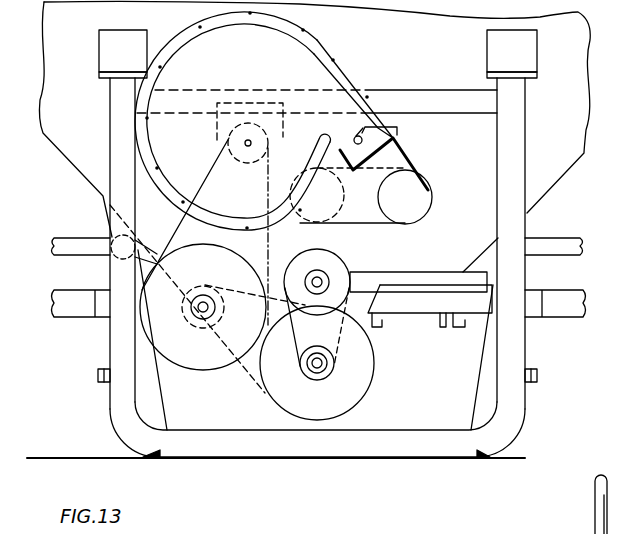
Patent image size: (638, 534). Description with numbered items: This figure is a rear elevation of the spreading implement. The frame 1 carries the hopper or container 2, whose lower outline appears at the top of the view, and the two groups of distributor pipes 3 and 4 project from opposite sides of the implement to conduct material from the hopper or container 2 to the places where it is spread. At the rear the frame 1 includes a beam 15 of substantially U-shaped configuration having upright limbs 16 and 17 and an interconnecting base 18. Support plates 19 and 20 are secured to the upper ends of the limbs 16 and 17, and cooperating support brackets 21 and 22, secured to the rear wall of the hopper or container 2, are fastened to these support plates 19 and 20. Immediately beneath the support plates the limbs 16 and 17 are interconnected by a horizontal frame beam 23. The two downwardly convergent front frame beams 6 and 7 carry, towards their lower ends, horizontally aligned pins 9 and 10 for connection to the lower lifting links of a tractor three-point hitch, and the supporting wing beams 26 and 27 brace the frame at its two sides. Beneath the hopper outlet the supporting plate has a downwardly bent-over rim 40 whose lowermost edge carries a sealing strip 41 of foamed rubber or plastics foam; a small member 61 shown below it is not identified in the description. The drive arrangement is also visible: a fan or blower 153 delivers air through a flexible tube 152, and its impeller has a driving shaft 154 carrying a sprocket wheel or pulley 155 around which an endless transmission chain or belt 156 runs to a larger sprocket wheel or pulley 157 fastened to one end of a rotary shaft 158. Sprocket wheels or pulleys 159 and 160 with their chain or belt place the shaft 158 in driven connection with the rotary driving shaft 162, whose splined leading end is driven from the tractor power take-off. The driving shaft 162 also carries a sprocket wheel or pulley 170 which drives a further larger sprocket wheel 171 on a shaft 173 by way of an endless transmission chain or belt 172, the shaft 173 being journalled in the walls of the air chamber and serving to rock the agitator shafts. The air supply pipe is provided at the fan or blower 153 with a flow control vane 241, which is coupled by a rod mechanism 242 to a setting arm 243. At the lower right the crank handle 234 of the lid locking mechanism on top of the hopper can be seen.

The frame 1 is at (103, 167).
The hopper or container 2 is at (577, 97).
The group of distributor pipes 3 is at (561, 288).
The group of distributor pipes 4 is at (70, 289).
The frame beam 6 is at (472, 410).
The frame beam 7 is at (160, 418).
The pin 9 is at (537, 374).
The pin 10 is at (97, 377).
The U-shaped beam 15 is at (430, 456).
The upright limb 16 is at (117, 143).
The upright limb 17 is at (517, 157).
The interconnecting base 18 is at (345, 455).
The support plate 19 is at (100, 82).
The support plate 20 is at (487, 74).
The support bracket 21 is at (110, 42).
The support bracket 22 is at (523, 50).
The horizontal frame beam 23 is at (405, 77).
The supporting wing beam 26 is at (565, 238).
The supporting wing beam 27 is at (58, 238).
The bent-over rim 40 is at (433, 272).
The sealing strip 41 is at (437, 292).
The bracket 61 is at (441, 319).
The flexible tube 152 is at (424, 200).
The fan or blower 153 is at (316, 64).
The driving shaft 154 is at (252, 141).
The sprocket wheel or pulley 155 is at (232, 152).
The belt 156 is at (200, 179).
The sprocket wheel or pulley 157 is at (197, 360).
The rotary shaft 158 is at (203, 308).
The sprocket wheel or pulley 159 is at (219, 284).
The sprocket wheel or pulley 160 is at (358, 390).
The rotary driving shaft 162 is at (337, 356).
The sprocket wheel or pulley 170 is at (309, 376).
The sprocket wheel 171 is at (333, 263).
The endless transmission chain or belt 172 is at (293, 332).
The shaft 173 is at (311, 276).
The crank handle 234 is at (593, 487).
The flow control vane 241 is at (357, 136).
The rod mechanism 242 is at (380, 110).
The setting arm 243 is at (397, 127).